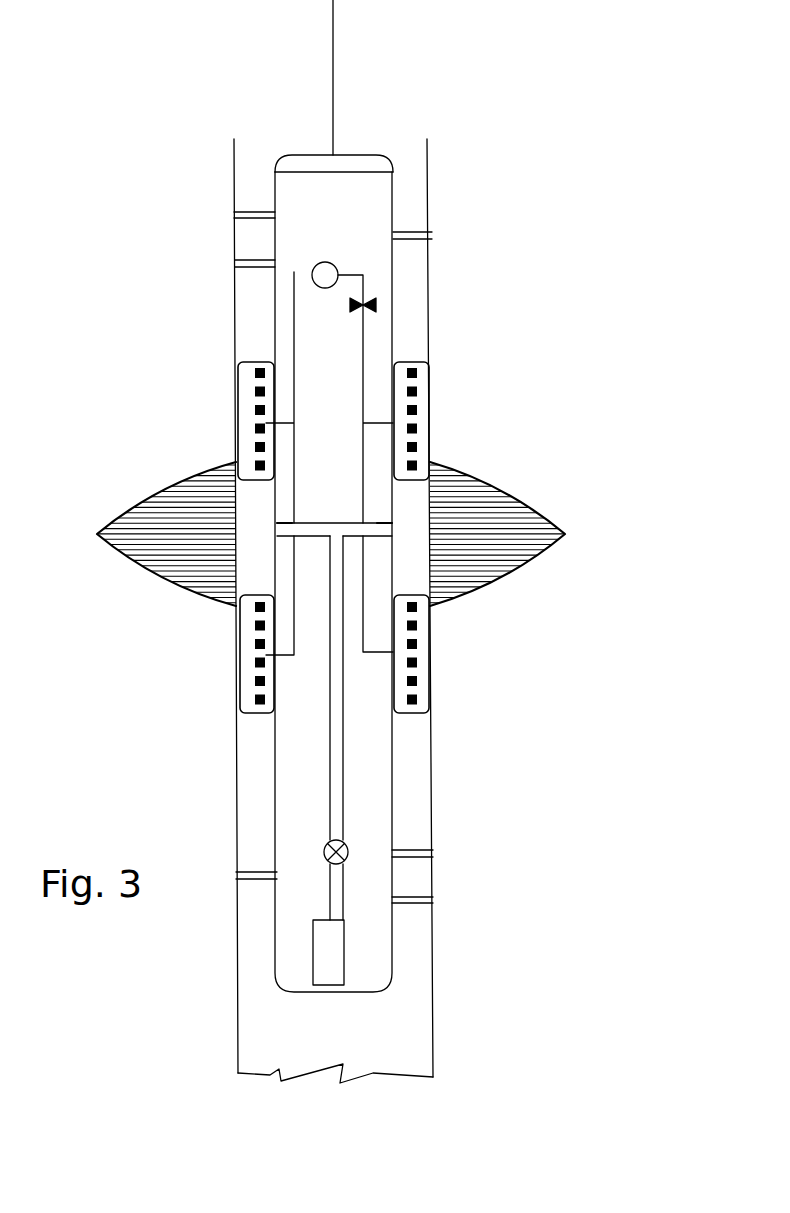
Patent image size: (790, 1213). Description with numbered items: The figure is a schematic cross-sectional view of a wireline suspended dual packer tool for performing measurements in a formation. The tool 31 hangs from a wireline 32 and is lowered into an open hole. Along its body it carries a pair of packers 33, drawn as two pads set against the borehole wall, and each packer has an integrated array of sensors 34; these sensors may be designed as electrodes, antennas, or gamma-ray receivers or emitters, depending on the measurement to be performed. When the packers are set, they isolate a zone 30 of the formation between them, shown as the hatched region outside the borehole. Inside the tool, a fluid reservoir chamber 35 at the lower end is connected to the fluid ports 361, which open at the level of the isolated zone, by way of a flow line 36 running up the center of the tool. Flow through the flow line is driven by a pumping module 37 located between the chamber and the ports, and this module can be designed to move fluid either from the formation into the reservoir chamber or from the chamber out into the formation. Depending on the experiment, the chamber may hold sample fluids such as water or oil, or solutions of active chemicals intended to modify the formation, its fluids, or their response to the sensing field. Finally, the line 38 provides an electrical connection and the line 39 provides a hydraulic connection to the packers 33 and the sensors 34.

The zone 30 is at (607, 442).
The tool 31 is at (290, 104).
The wireline 32 is at (333, 60).
The packers 33 is at (243, 398).
The sensors 34 is at (257, 445).
The fluid reservoir chamber 35 is at (322, 945).
The flow line 36 is at (342, 773).
The pumping module 37 is at (327, 845).
The line 38 is at (293, 358).
The line 39 is at (362, 332).
The fluid ports 361 is at (392, 527).